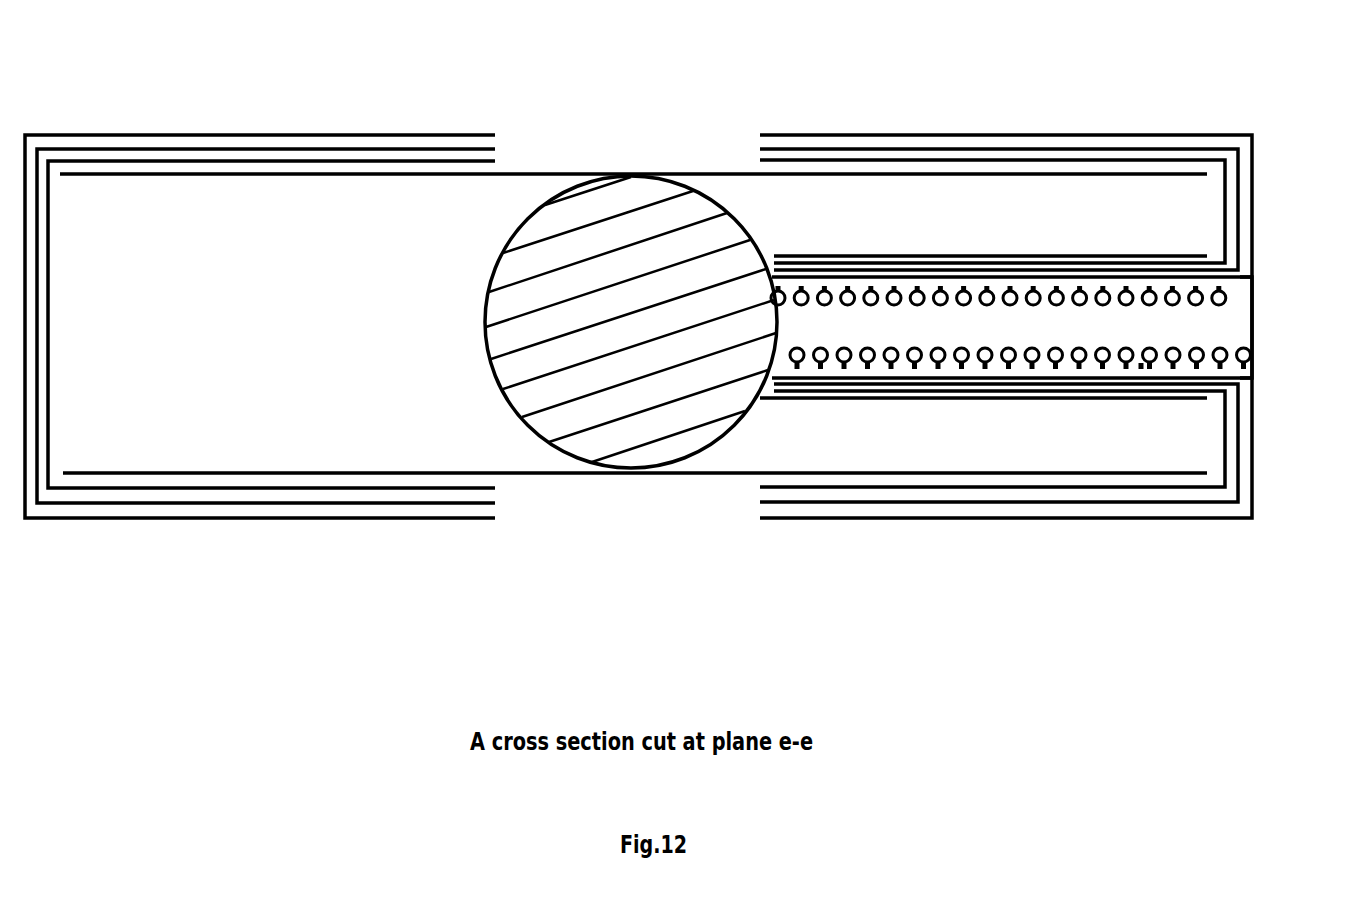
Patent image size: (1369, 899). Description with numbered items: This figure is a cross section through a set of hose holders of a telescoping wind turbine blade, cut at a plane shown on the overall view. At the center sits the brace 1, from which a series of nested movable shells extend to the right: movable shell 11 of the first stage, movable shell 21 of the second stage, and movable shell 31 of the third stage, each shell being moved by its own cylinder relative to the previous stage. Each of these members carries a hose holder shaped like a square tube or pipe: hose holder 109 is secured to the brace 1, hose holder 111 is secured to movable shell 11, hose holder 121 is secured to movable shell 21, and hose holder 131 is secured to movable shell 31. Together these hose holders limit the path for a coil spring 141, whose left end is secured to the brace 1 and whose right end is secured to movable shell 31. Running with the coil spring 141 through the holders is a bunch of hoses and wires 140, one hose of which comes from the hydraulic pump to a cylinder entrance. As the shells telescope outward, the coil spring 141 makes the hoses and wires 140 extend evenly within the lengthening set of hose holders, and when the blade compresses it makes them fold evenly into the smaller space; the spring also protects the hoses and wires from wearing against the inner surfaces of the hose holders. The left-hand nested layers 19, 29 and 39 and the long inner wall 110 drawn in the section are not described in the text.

The brace 1 is at (673, 220).
The movable shell 11 is at (897, 160).
The left inner layer 19 is at (495, 160).
The movable shell 21 is at (1073, 148).
The left middle layer 29 is at (356, 148).
The movable shell 31 is at (1208, 135).
The left outer layer 39 is at (237, 135).
The hose holder 109 is at (917, 256).
The inner wall 110 is at (707, 174).
The hose holder 111 is at (1016, 263).
The hose holder 121 is at (1141, 357).
The hose holder 131 is at (1252, 267).
The bunch of hoses and wires 140 is at (1227, 295).
The coil spring 141 is at (1253, 367).